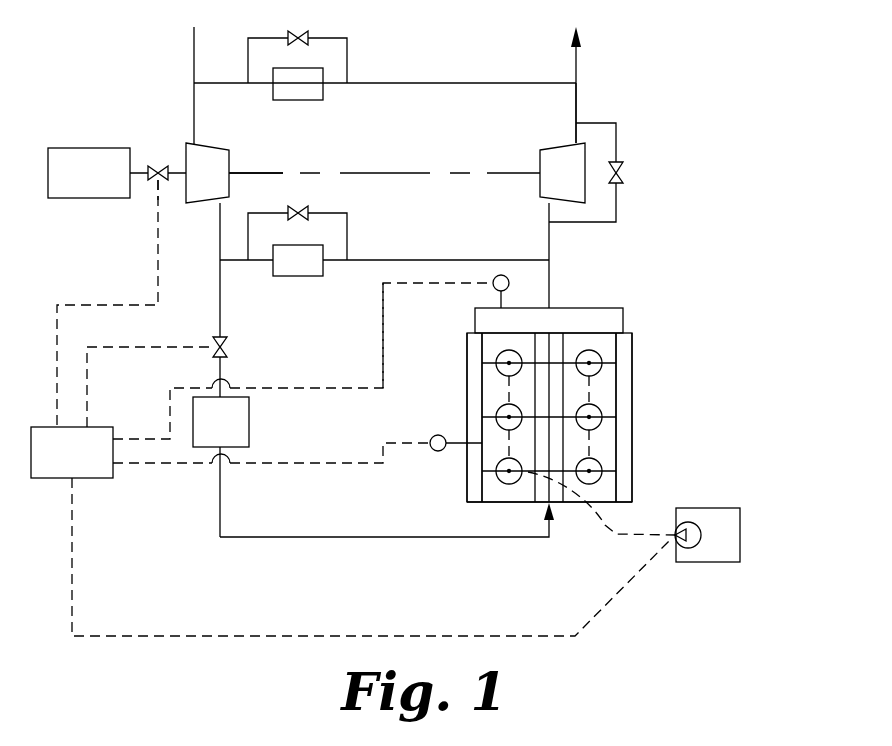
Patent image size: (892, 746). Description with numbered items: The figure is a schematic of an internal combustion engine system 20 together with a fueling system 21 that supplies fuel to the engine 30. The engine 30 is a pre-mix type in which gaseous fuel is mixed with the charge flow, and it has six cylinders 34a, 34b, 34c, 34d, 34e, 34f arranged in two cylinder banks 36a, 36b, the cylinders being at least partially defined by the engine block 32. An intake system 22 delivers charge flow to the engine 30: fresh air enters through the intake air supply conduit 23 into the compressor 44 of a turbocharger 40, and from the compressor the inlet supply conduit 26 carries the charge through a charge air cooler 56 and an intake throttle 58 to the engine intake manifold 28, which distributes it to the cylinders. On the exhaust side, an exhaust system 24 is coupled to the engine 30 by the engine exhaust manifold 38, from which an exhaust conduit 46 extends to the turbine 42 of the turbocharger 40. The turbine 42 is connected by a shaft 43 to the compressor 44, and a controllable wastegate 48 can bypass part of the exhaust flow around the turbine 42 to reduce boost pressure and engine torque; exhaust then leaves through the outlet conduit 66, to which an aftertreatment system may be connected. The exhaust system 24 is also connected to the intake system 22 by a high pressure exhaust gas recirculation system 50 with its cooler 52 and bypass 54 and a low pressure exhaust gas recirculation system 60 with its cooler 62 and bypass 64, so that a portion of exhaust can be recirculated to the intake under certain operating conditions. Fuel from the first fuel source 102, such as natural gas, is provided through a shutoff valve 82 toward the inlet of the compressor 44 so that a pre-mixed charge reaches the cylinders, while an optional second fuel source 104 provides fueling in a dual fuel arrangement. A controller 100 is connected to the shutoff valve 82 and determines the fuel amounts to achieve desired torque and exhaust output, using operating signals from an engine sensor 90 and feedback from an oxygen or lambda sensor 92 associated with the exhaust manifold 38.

The internal combustion engine system 20 is at (733, 176).
The fueling system 21 is at (118, 217).
The intake system 22 is at (228, 543).
The intake air supply conduit 23 is at (194, 100).
The exhaust system 24 is at (578, 98).
The inlet supply conduit 26 is at (293, 537).
The engine intake manifold 28 is at (547, 350).
The engine 30 is at (640, 344).
The engine block 32 is at (518, 503).
The cylinder 34a is at (498, 462).
The cylinder 34b is at (498, 408).
The cylinder 34c is at (498, 353).
The cylinder 34d is at (598, 374).
The cylinder 34e is at (598, 425).
The cylinder 34f is at (598, 462).
The cylinder bank 36a is at (475, 488).
The cylinder bank 36b is at (620, 490).
The engine exhaust manifold 38 is at (585, 310).
The turbocharger 40 is at (425, 166).
The turbine 42 is at (556, 148).
The shaft 43 is at (372, 173).
The compressor 44 is at (215, 143).
The exhaust conduit 46 is at (549, 238).
The controllable wastegate 48 is at (622, 168).
The high pressure exhaust gas recirculation system 50 is at (377, 275).
The cooler 52 is at (298, 276).
The bypass 54 is at (347, 222).
The charge air cooler 56 is at (249, 425).
The intake throttle 58 is at (213, 352).
The low pressure exhaust gas recirculation system 60 is at (472, 78).
The cooler 62 is at (305, 100).
The bypass 64 is at (347, 43).
The outlet conduit 66 is at (576, 65).
The shutoff valve 82 is at (158, 165).
The engine sensor 90 is at (430, 440).
The oxygen or lambda sensor 92 is at (502, 275).
The controller 100 is at (72, 452).
The first fuel source 102 is at (89, 173).
The second fuel source 104 is at (740, 526).